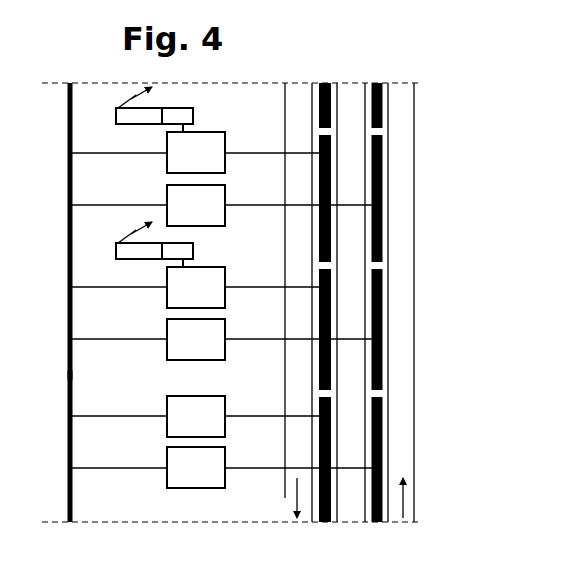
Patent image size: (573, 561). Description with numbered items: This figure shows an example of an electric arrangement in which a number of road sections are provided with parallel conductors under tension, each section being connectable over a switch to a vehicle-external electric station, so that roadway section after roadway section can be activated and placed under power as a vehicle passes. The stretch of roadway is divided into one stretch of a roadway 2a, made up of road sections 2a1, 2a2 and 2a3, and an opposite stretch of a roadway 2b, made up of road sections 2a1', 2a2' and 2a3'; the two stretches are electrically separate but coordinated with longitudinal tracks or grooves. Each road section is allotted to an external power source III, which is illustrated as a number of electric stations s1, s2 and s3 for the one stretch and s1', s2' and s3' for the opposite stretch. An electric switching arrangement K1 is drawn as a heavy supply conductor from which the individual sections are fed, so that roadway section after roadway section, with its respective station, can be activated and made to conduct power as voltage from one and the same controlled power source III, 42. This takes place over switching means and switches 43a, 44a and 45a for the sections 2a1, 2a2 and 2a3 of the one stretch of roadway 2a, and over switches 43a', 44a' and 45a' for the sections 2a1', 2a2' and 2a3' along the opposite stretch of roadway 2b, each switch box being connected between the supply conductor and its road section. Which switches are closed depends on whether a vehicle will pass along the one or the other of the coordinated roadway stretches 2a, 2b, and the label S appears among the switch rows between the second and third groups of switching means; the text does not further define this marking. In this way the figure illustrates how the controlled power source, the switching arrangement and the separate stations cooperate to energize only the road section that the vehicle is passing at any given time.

The stretch of a roadway 2a is at (326, 82).
The opposite stretch of a roadway 2b is at (387, 108).
The road section 2a1 is at (278, 183).
The road section 2a2 is at (278, 315).
The road section 2a3 is at (278, 447).
The road section 2a1' is at (433, 198).
The road section 2a2' is at (429, 329).
The road section 2a3' is at (426, 459).
The controlled power source 42 is at (67, 223).
The switching means 43a is at (194, 155).
The switching means 43a' is at (147, 204).
The switching means 44a is at (194, 289).
The switching means 44a' is at (147, 338).
The switching means 45a is at (147, 411).
The switching means 45a' is at (147, 462).
The electric switching arrangement K1 is at (46, 109).
The external power source III is at (68, 253).
The signal S is at (103, 365).
The electric station s1 is at (152, 118).
The electric station s1' is at (298, 186).
The electric station s2 is at (152, 253).
The electric station s2' is at (298, 321).
The electric station s3 is at (243, 393).
The electric station s3' is at (298, 450).